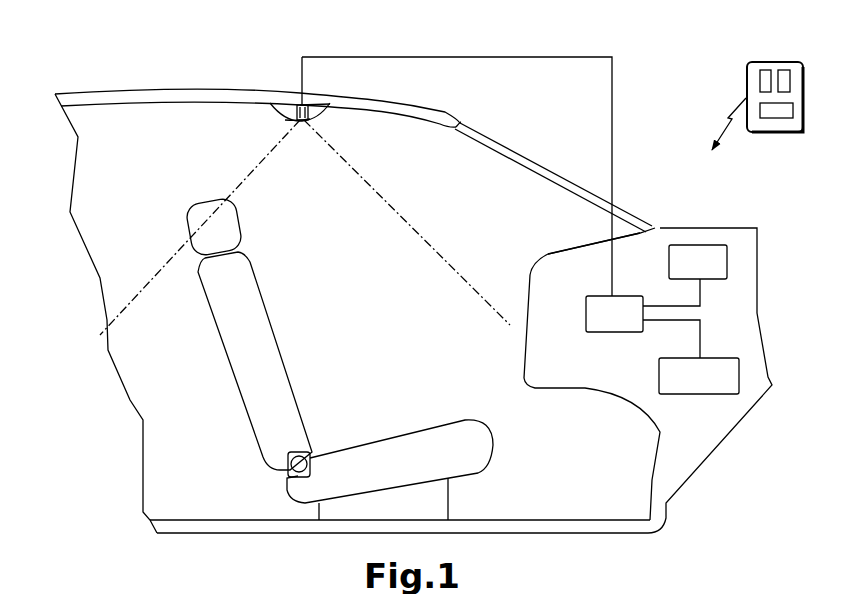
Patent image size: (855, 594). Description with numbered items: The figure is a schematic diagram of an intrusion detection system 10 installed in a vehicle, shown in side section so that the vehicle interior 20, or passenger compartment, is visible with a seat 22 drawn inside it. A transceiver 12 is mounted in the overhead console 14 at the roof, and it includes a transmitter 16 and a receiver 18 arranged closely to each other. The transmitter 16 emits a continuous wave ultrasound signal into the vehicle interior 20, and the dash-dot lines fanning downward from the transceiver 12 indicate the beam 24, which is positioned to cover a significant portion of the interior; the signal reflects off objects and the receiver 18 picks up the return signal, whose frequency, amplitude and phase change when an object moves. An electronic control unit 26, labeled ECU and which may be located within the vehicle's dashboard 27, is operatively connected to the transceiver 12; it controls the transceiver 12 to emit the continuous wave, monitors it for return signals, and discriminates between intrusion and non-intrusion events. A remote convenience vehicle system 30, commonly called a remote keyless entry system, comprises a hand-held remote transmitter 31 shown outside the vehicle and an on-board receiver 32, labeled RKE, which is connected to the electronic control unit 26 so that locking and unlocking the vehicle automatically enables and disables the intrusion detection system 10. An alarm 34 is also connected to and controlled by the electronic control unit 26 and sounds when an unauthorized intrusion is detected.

The intrusion detection system 10 is at (266, 56).
The transceiver 12 is at (297, 103).
The overhead console 14 is at (285, 120).
The transmitter 16 is at (282, 117).
The receiver 18 is at (302, 107).
The vehicle interior 20 is at (150, 250).
The seat 22 is at (339, 358).
The beam 24 is at (425, 236).
The electronic control unit 26 is at (605, 296).
The dashboard 27 is at (588, 248).
The remote convenience vehicle system 30 is at (708, 86).
The remote transmitter 31 is at (773, 62).
The on-board receiver 32 is at (710, 245).
The alarm 34 is at (700, 394).